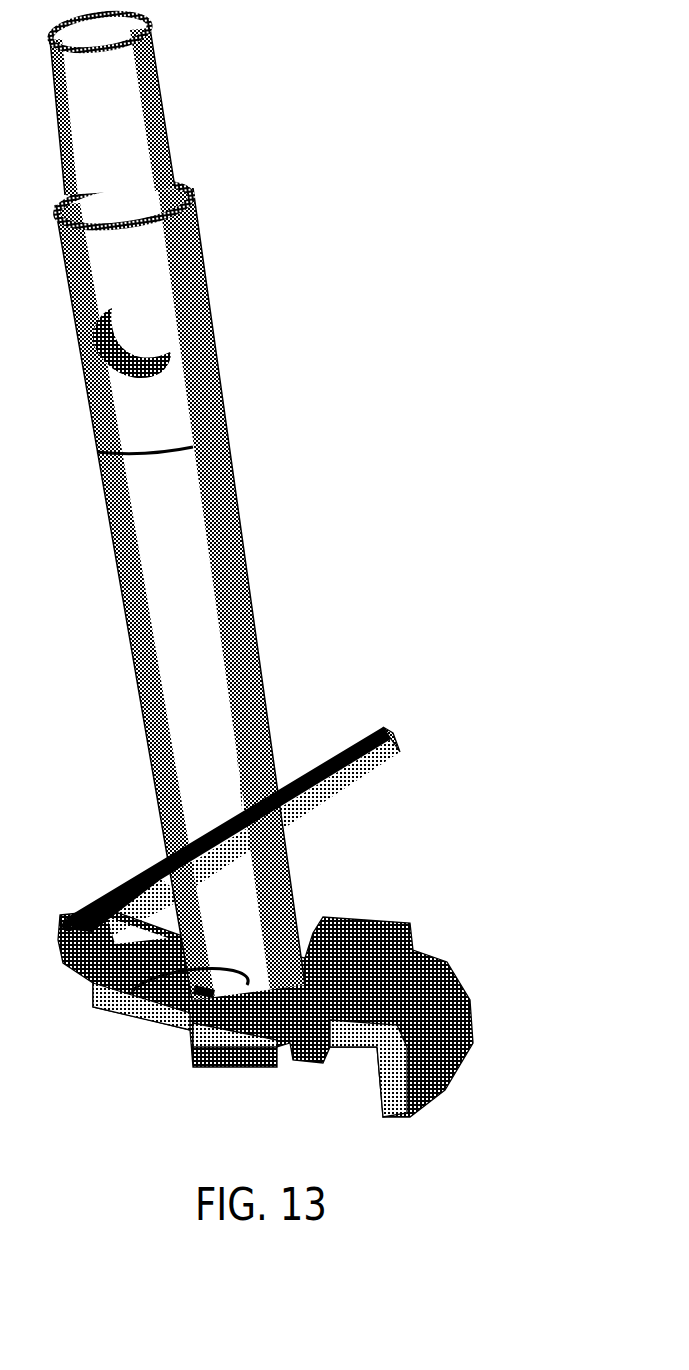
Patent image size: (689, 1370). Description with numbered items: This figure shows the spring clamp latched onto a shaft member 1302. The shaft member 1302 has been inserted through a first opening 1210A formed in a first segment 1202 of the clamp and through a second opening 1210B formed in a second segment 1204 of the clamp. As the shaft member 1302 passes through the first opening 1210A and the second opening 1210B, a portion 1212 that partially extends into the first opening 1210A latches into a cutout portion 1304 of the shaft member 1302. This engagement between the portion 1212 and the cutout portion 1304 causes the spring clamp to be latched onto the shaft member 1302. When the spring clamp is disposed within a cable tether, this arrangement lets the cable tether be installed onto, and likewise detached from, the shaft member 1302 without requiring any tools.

The first segment 1202 is at (301, 911).
The second segment 1204 is at (133, 1013).
The first opening 1210A is at (150, 872).
The second opening 1210B is at (203, 988).
The portion 1212 is at (295, 783).
The shaft member 1302 is at (243, 511).
The cutout portion 1304 is at (268, 766).